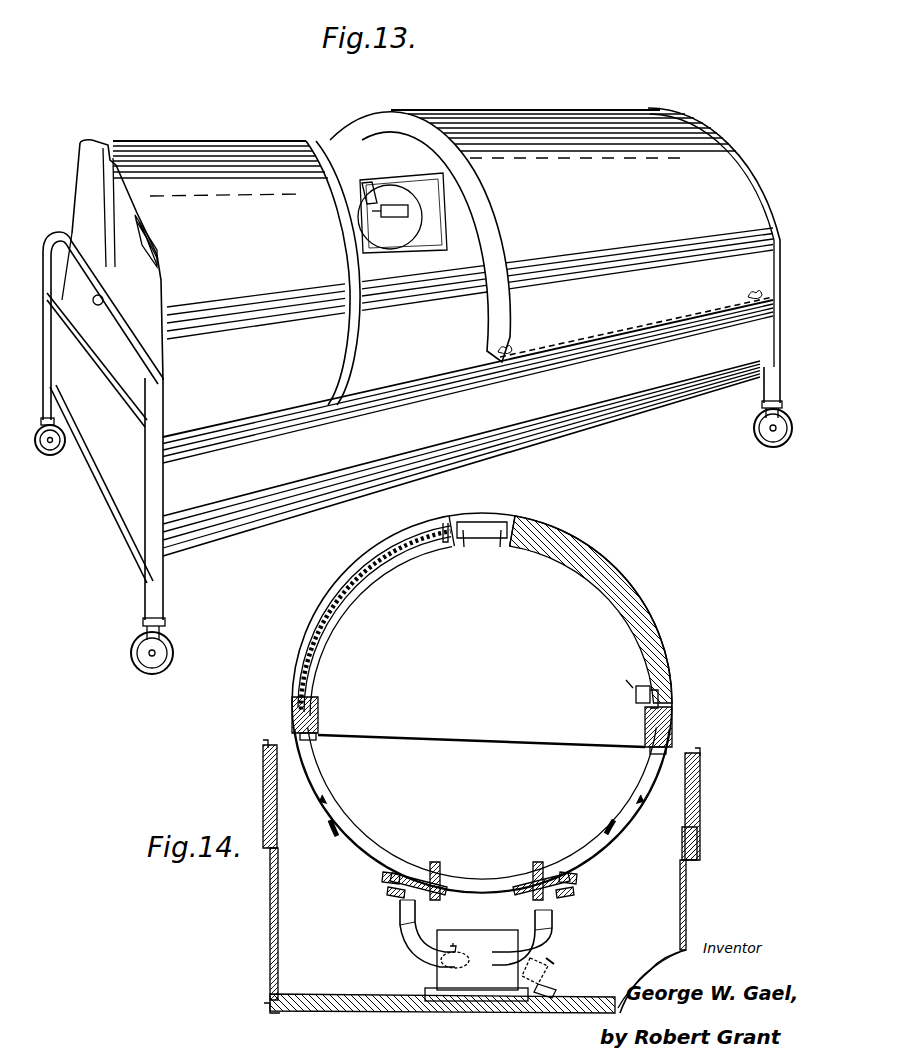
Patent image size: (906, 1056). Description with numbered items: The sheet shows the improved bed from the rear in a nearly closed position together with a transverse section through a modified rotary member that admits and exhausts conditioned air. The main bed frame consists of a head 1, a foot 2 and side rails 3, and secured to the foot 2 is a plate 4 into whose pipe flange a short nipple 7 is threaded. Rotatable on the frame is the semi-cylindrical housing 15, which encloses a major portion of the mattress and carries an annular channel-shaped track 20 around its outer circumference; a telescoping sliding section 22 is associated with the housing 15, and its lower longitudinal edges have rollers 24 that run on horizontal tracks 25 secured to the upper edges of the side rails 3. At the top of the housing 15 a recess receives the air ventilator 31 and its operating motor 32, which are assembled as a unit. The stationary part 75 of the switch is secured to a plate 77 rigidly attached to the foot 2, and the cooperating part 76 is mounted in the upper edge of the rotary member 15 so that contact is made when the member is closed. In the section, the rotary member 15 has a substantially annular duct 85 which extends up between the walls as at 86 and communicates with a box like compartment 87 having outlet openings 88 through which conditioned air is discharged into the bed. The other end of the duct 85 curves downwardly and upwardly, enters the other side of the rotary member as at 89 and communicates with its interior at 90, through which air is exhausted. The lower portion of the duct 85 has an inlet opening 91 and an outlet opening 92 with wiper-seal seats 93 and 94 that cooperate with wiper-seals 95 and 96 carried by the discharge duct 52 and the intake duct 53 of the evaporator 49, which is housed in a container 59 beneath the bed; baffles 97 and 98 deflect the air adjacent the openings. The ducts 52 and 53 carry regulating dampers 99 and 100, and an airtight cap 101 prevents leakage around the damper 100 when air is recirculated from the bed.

In FIG. 13, the head 1 is at (770, 385).
In FIG. 13, the foot 2 is at (154, 536).
In FIG. 13, the side rails 3 is at (287, 503).
In FIG. 14, the side rails 3 is at (265, 786).
In FIG. 13, the plate 4 is at (107, 392).
In FIG. 13, the short pipe section or nipple 7 is at (94, 303).
In FIG. 13, the semi-cylindrical housing 15 is at (195, 150).
In FIG. 14, the semi-cylindrical housing 15 is at (605, 595).
In FIG. 13, the annular channel-shaped track 20 is at (350, 315).
In FIG. 13, the telescoping sliding section 22 is at (567, 118).
In FIG. 13, the rollers 24 is at (521, 362).
In FIG. 13, the horizontal tracks 25 is at (470, 378).
In FIG. 13, the air ventilator 31 is at (417, 237).
In FIG. 13, the operating motor 32 is at (360, 205).
In FIG. 14, the evaporator 49 is at (479, 980).
In FIG. 14, the air inlet pipe 52 is at (404, 926).
In FIG. 14, the air outlet pipe 53 is at (557, 935).
In FIG. 14, the container 59 is at (282, 934).
In FIG. 13, the stationary part of the switch 75 is at (100, 143).
In FIG. 13, the cooperating part of the switch 76 is at (148, 236).
In FIG. 13, the plate 77 is at (90, 195).
In FIG. 14, the annular duct 85 is at (318, 778).
In FIG. 14, the duct portion between walls 86 is at (365, 575).
In FIG. 14, the box like compartment 87 is at (503, 517).
In FIG. 14, the outlet openings 88 is at (507, 554).
In FIG. 14, the duct entry 89 is at (650, 763).
In FIG. 14, the exhaust communication 90 is at (635, 697).
In FIG. 14, the inlet opening 91 is at (387, 880).
In FIG. 14, the outlet opening 92 is at (575, 882).
In FIG. 14, the wiper-seal seat 93 is at (440, 892).
In FIG. 14, the wiper-seal seat 94 is at (528, 892).
In FIG. 14, the wiper-seal 95 is at (395, 895).
In FIG. 14, the wiper-seal 96 is at (572, 906).
In FIG. 14, the baffle 97 is at (436, 877).
In FIG. 14, the baffle 98 is at (537, 876).
In FIG. 14, the regulating damper 99 is at (437, 962).
In FIG. 14, the regulating damper 100 is at (552, 963).
In FIG. 14, the airtight cap 101 is at (557, 984).